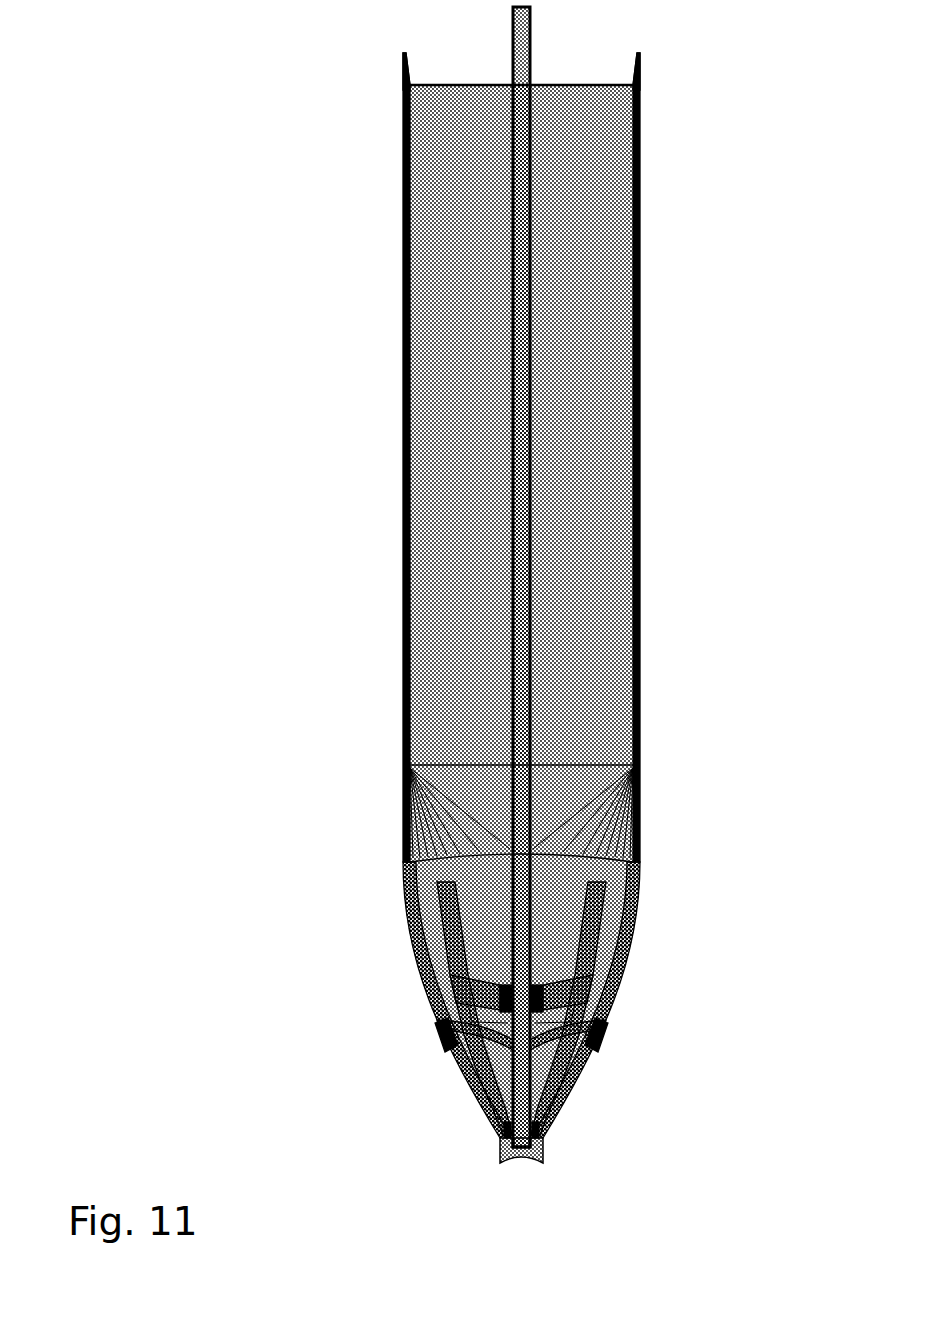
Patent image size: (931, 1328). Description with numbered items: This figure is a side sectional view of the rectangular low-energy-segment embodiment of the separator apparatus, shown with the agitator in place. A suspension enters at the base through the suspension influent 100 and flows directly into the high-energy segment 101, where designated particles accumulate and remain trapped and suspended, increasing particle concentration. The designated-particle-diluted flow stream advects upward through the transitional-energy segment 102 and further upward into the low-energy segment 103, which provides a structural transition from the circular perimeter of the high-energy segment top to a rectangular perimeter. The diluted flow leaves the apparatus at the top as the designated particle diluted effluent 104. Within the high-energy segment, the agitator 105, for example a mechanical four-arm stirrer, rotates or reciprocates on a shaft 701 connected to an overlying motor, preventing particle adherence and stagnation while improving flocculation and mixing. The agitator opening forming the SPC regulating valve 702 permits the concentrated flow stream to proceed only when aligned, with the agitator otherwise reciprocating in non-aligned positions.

The suspension influent 100 is at (500, 1160).
The high-energy segment 101 is at (418, 890).
The transitional-energy segment 102 is at (470, 782).
The low-energy segment 103 is at (403, 322).
The designated particle diluted effluent 104 is at (403, 55).
The agitator 105 is at (607, 908).
The shaft 701 is at (531, 670).
The SPC regulating valve 702 is at (620, 1013).